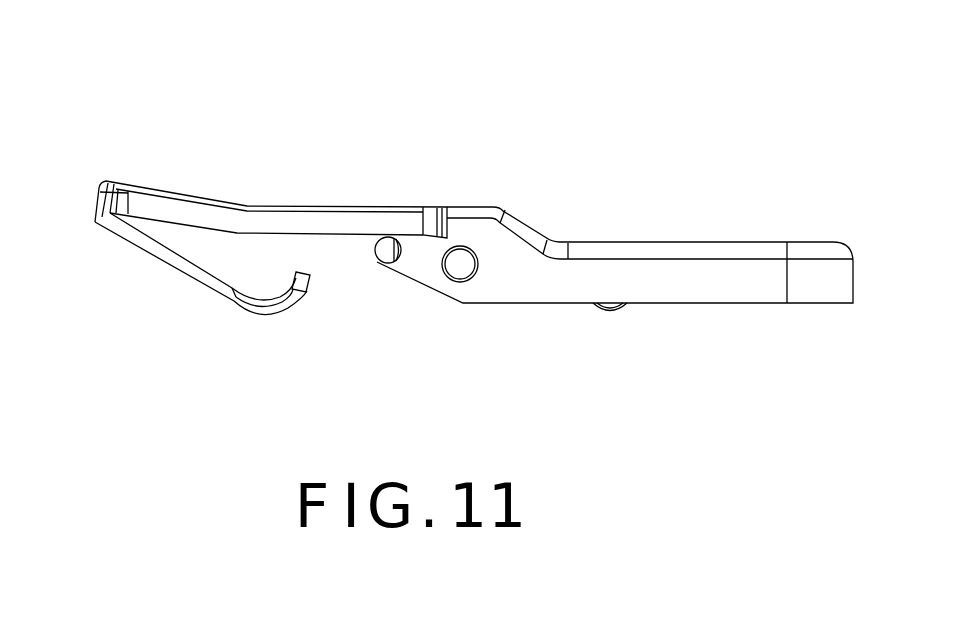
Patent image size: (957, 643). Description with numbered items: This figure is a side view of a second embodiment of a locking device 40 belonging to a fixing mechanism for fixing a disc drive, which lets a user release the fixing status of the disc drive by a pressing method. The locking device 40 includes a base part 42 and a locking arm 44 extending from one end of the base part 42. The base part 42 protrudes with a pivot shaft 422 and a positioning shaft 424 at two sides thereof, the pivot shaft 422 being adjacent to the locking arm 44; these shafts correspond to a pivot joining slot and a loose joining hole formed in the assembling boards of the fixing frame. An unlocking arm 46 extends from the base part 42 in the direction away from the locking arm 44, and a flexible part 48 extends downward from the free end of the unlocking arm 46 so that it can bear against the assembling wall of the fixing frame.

The locking device 40 is at (871, 93).
The base part 42 is at (478, 205).
The locking arm 44 is at (697, 246).
The unlocking arm 46 is at (285, 203).
The flexible part 48 is at (168, 252).
The pivot shaft 422 is at (460, 279).
The positioning shaft 424 is at (381, 262).